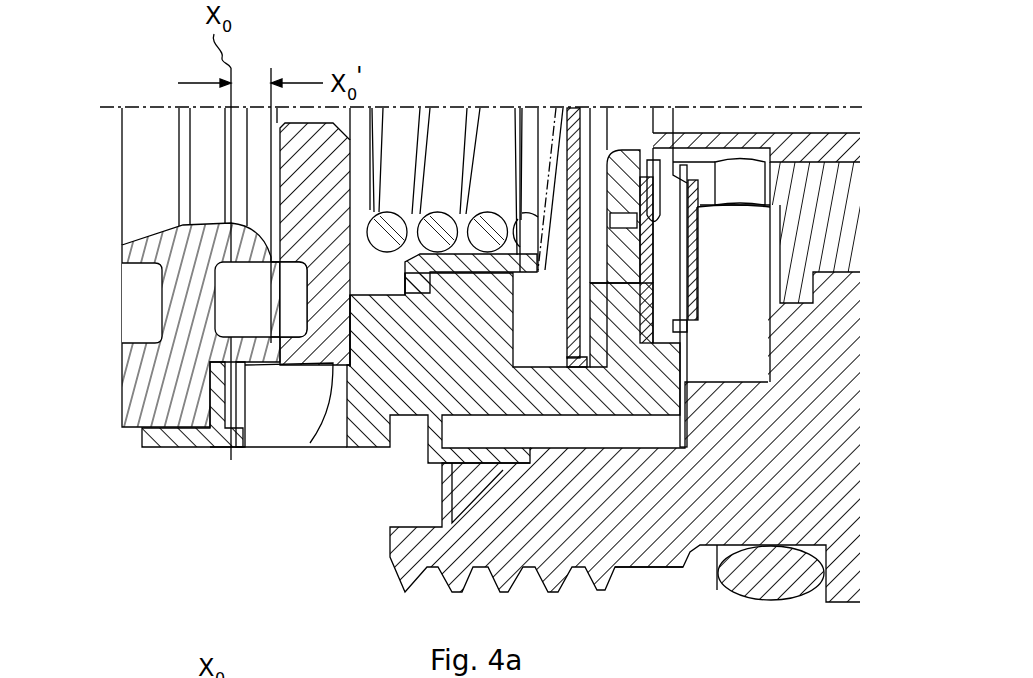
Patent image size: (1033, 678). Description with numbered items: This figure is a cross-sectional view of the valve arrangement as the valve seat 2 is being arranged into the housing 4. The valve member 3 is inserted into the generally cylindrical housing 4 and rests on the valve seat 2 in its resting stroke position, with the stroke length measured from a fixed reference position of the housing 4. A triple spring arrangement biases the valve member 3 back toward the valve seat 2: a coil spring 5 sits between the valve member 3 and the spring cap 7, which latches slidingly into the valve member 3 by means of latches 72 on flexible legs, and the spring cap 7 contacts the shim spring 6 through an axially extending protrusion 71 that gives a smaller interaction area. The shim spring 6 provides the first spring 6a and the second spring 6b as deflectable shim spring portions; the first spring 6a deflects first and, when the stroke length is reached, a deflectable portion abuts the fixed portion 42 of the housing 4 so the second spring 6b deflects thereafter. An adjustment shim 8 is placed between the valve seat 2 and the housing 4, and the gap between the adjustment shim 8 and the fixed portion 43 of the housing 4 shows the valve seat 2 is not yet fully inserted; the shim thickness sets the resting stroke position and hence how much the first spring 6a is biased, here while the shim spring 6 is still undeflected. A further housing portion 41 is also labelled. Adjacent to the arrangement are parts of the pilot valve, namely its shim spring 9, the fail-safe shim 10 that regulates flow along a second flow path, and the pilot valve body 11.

The valve seat 2 is at (121, 403).
The valve member 3 is at (310, 443).
The housing 4 is at (367, 450).
The body shoulder 41 is at (585, 358).
The fixed portion of the housing 42 is at (598, 314).
The fixed portion of the housing 43 is at (233, 408).
The coil spring 5 is at (453, 122).
The shim spring 6 is at (693, 75).
The first spring 6a is at (650, 225).
The second spring 6b is at (685, 277).
The spring cap 7 is at (548, 110).
The protrusion 71 is at (560, 110).
The latches 72 is at (410, 296).
The adjustment shim 8 is at (217, 426).
The shim spring 9 is at (687, 437).
The fail-safe shim 10 is at (697, 330).
The pilot valve body 11 is at (638, 568).